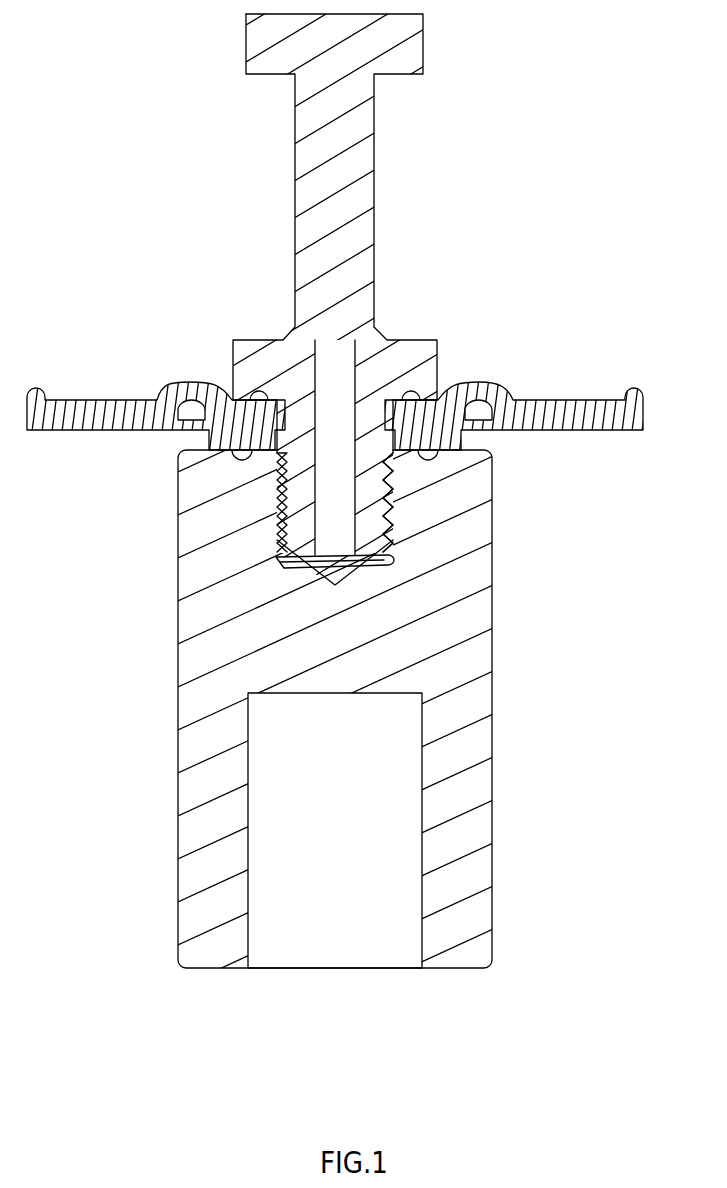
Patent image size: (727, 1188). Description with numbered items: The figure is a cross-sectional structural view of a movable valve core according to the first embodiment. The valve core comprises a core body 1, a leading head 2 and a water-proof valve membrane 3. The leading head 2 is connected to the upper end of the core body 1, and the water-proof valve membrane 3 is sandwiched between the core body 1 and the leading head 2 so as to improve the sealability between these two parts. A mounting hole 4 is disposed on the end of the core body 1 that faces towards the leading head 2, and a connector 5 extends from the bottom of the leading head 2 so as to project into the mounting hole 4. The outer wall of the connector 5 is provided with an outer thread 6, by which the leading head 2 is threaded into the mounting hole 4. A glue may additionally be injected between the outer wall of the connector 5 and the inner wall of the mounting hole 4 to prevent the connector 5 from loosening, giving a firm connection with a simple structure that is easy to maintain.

The core body 1 is at (492, 688).
The leading head 2 is at (373, 253).
The water-proof valve membrane 3 is at (123, 400).
The mounting hole 4 is at (283, 542).
The connector 5 is at (398, 515).
The outer thread 6 is at (283, 497).